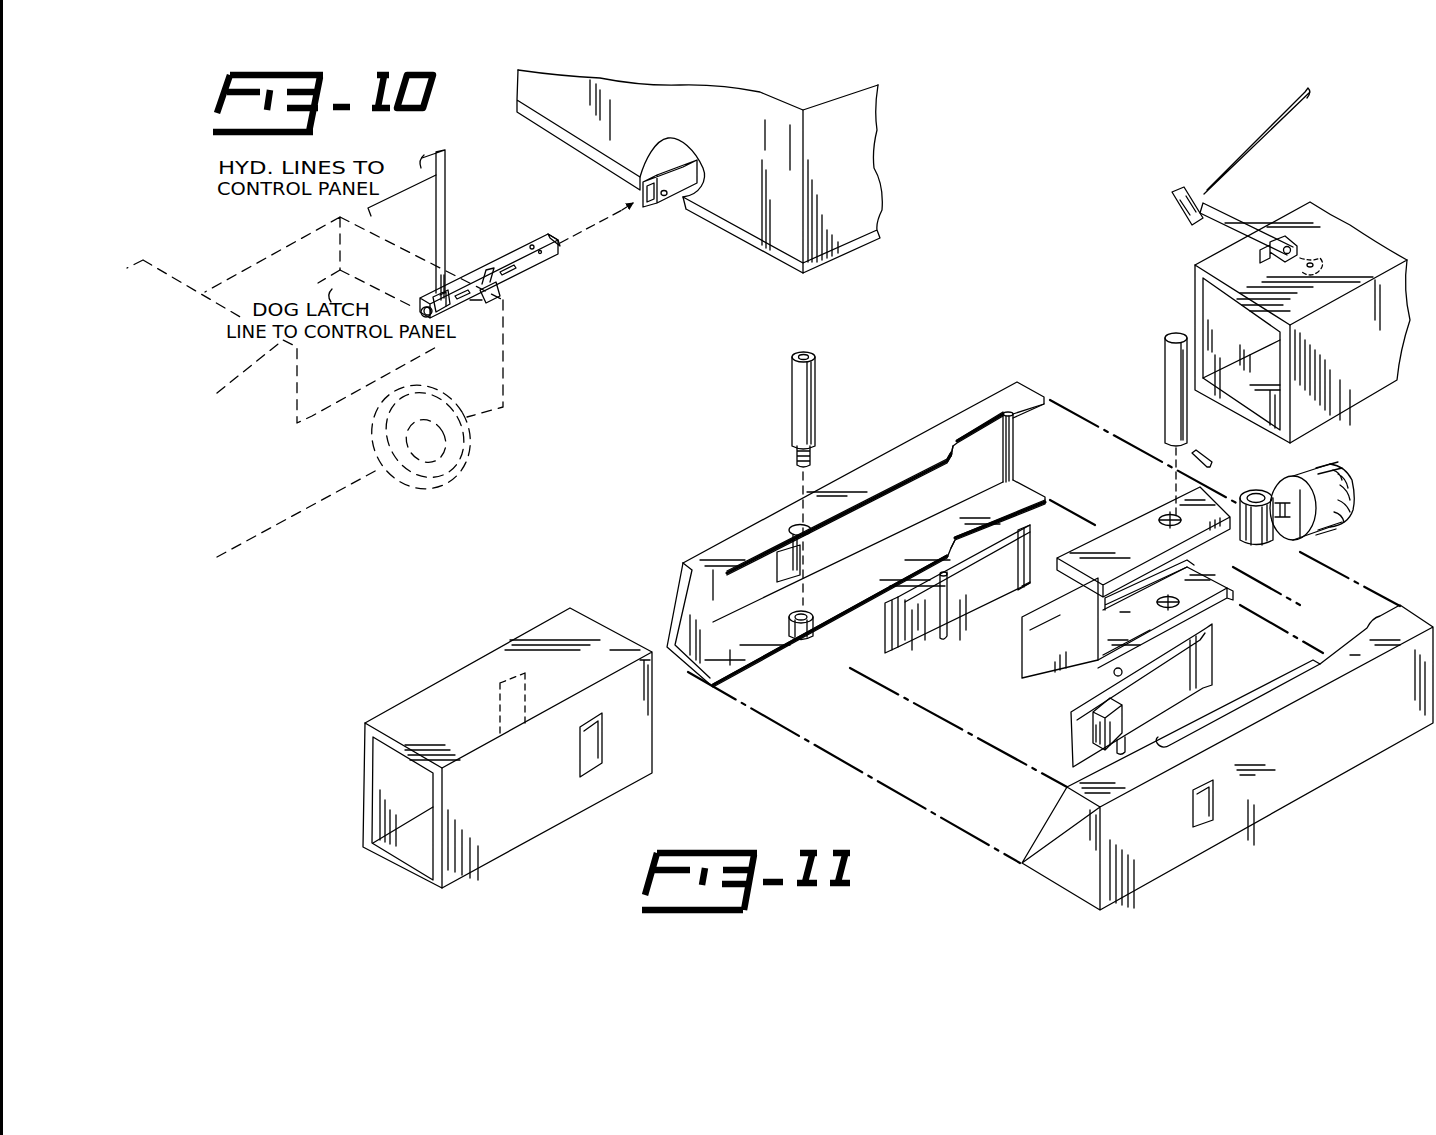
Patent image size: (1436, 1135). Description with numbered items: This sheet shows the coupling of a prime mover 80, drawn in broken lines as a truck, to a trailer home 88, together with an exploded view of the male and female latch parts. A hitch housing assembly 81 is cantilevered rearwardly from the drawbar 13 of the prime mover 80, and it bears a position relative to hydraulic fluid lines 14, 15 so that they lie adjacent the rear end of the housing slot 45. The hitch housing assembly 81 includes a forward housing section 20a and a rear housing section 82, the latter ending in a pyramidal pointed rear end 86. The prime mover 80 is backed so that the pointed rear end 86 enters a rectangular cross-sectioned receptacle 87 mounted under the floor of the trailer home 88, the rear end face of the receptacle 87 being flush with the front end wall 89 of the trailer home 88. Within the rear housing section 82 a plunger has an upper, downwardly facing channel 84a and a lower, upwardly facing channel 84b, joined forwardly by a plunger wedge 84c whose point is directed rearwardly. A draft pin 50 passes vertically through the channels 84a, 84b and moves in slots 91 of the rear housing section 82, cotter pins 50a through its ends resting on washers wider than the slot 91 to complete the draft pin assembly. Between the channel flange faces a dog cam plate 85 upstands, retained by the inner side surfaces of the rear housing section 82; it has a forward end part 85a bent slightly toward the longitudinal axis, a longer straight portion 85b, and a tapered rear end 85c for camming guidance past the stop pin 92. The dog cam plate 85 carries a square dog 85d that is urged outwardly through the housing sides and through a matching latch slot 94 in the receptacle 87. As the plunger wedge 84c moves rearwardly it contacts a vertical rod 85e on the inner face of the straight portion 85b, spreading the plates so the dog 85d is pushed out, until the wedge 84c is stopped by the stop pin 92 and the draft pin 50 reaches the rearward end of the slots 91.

In FIG. 10, the drawbar 13 is at (420, 311).
In FIG. 10, the hydraulic fluid line 14 is at (445, 197).
In FIG. 10, the hydraulic fluid line 15 is at (434, 211).
In FIG. 10, the forward housing section 20a is at (478, 303).
In FIG. 10, the housing slot 45 is at (430, 296).
In FIG. 11, the draft pin 50 is at (1166, 385).
In FIG. 11, the cotter pin 50a is at (1212, 460).
In FIG. 10, the prime mover 80 is at (283, 398).
In FIG. 10, the hitch housing assembly 81 is at (489, 267).
In FIG. 10, the rear housing section 82 is at (530, 248).
In FIG. 11, the rear housing section 82 is at (885, 465).
In FIG. 11, the upper channel 84a is at (1134, 525).
In FIG. 11, the lower channel 84b is at (1218, 607).
In FIG. 11, the plunger wedge 84c is at (1080, 630).
In FIG. 11, the dog cam plate 85 is at (925, 619).
In FIG. 11, the forward end part 85a is at (1027, 587).
In FIG. 11, the straight portion 85b is at (1000, 582).
In FIG. 11, the tapered rear end 85c is at (870, 663).
In FIG. 11, the dog 85d is at (1128, 700).
In FIG. 11, the vertical rod 85e is at (950, 635).
In FIG. 10, the pyramidal pointed rear end 86 is at (553, 240).
In FIG. 10, the receptacle 87 is at (673, 160).
In FIG. 11, the receptacle 87 is at (536, 748).
In FIG. 10, the trailer home 88 is at (728, 240).
In FIG. 10, the front end wall 89 is at (699, 173).
In FIG. 11, the slot 91 is at (966, 440).
In FIG. 11, the stop pin 92 is at (787, 413).
In FIG. 11, the latch slot 94 is at (602, 752).